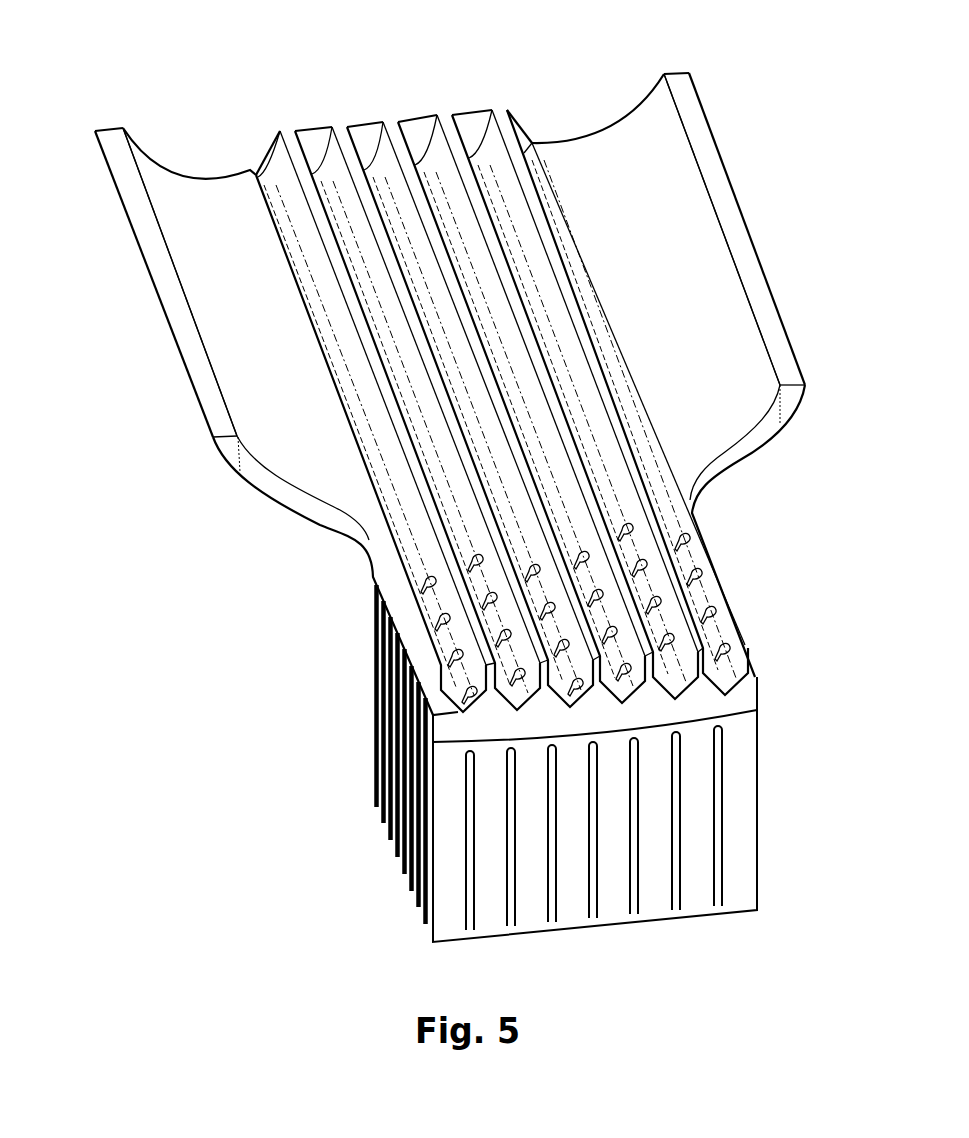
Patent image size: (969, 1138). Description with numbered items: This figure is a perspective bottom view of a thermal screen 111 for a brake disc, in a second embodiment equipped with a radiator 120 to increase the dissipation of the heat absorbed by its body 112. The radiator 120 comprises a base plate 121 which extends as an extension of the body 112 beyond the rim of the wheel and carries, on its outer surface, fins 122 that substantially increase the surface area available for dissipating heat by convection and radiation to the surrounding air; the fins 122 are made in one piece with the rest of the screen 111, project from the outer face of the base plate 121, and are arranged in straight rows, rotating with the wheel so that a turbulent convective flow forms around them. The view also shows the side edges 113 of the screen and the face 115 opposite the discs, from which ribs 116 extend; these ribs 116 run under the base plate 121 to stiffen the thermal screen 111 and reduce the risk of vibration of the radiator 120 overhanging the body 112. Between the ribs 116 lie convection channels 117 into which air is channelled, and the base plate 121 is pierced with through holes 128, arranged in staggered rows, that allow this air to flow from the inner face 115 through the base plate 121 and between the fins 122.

The thermal screen 111 is at (190, 132).
The body 112 is at (610, 147).
The side edge 113 is at (177, 302).
The face opposite the discs 115 is at (267, 357).
The ribs 116 is at (282, 129).
The convection channels 117 is at (316, 138).
The radiator 120 is at (496, 766).
The base plate 121 is at (375, 626).
The fins 122 is at (418, 947).
The through holes 128 is at (412, 578).